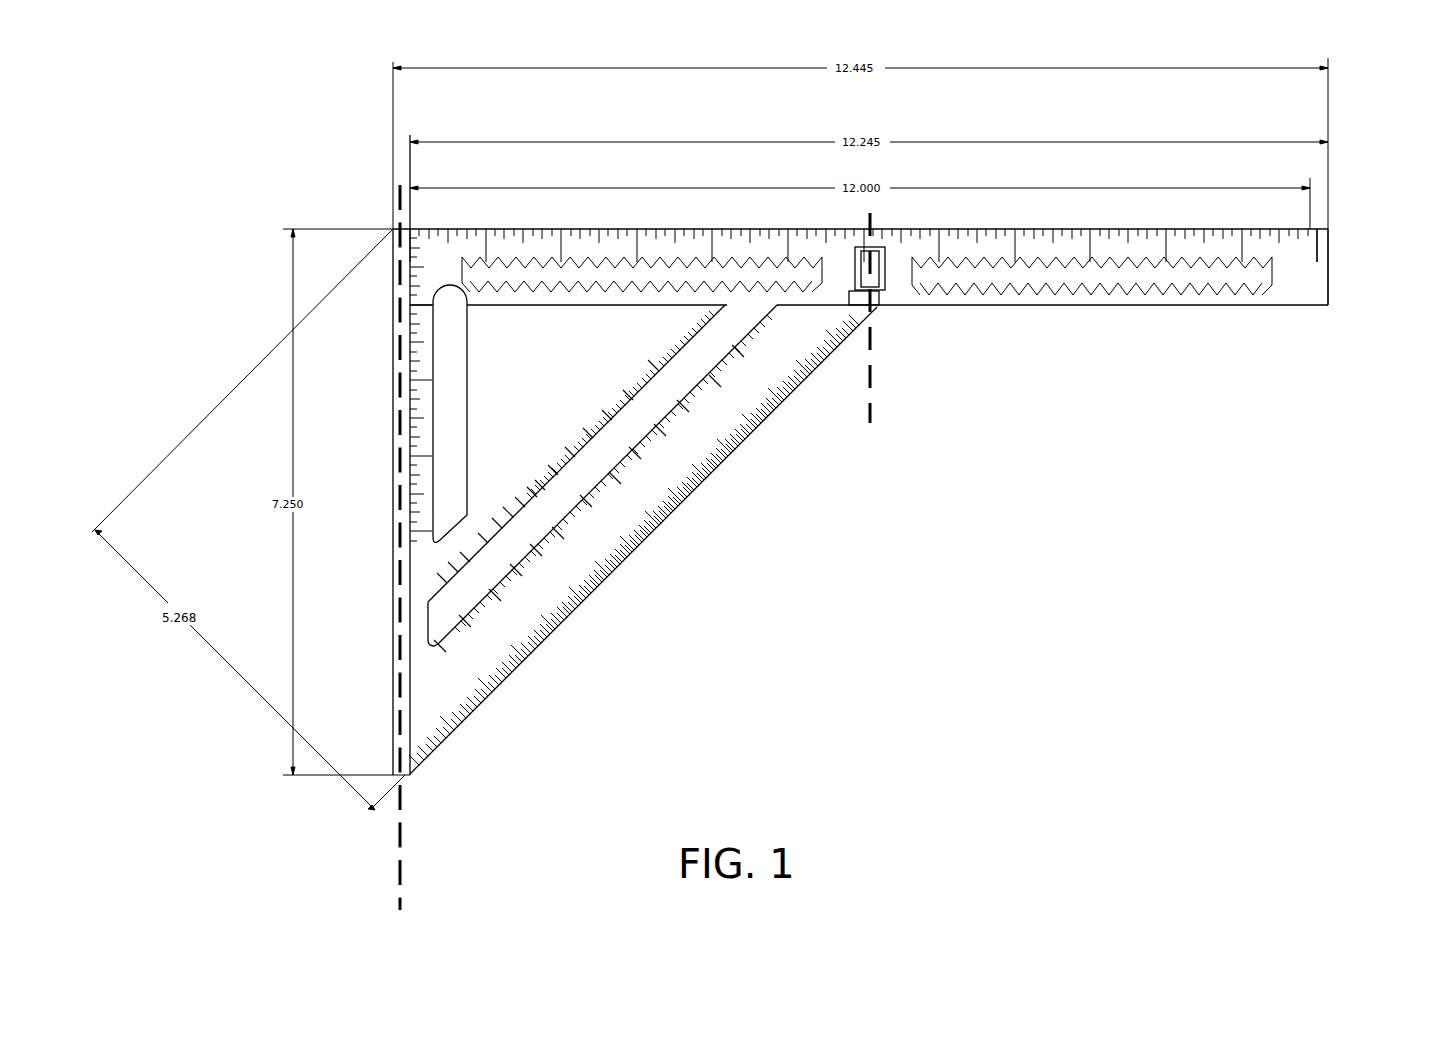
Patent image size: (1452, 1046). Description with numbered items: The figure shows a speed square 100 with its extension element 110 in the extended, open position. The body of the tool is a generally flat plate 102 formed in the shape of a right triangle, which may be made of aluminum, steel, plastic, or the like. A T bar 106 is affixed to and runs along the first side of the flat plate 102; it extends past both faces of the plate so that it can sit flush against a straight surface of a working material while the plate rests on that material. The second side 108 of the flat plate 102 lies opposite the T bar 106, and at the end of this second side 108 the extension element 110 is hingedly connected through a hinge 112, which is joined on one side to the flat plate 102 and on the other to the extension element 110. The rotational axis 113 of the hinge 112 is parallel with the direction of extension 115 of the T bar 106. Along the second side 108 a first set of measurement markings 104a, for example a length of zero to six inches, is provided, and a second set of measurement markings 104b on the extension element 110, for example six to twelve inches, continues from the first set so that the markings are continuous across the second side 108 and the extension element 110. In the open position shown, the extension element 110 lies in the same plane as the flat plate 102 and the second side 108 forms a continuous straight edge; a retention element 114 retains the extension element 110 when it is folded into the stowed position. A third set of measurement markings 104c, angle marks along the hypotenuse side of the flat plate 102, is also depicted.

The speed square 100 is at (865, 626).
The flat plate 102 is at (695, 490).
The first set of measurement markings 104a is at (630, 233).
The second set of measurement markings 104b is at (1040, 233).
The degree scale on hypotenuse 104c is at (578, 604).
The T bar 106 is at (393, 415).
The second side 108 is at (477, 250).
The extension element 110 is at (1290, 300).
The hinge 112 is at (872, 306).
The rotational axis 113 is at (870, 424).
The retention element 114 is at (1332, 264).
The direction of extension 115 is at (403, 865).